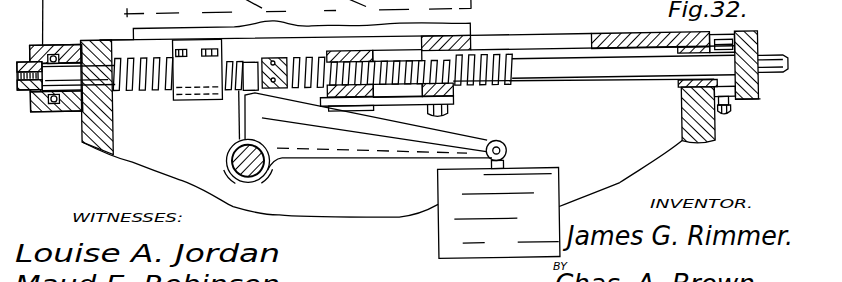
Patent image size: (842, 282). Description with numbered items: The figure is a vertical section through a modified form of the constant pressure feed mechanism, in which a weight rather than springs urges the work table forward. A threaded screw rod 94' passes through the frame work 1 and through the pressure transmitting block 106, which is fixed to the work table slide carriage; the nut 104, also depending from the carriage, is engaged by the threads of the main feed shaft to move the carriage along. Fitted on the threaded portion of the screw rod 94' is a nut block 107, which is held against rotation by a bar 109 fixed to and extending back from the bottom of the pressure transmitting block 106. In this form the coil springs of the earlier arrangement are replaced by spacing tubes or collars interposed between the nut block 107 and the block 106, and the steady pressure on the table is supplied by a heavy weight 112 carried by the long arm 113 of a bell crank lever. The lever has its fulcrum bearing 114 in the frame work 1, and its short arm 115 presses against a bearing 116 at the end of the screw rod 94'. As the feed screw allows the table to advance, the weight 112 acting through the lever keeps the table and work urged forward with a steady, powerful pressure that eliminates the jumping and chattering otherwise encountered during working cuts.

The frame work 1 is at (114, 134).
The screw rod 94' is at (415, 88).
The nut 104 is at (182, 97).
The pressure transmitting block 106 is at (452, 88).
The nut block 107 is at (360, 51).
The bar 109 is at (386, 105).
The heavy weight 112 is at (488, 249).
The long arm 113 is at (316, 159).
The fulcrum bearing 114 is at (253, 170).
The short arm 115 is at (236, 90).
The bearing 116 is at (282, 56).